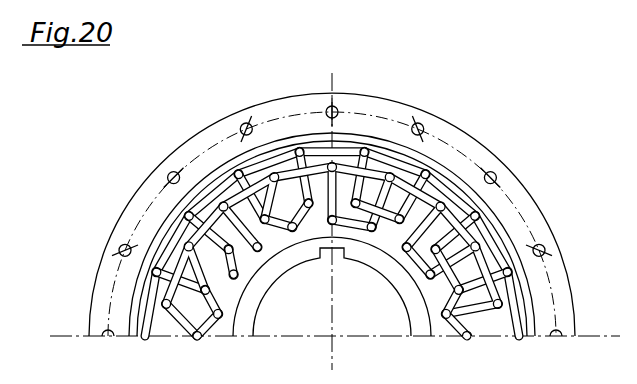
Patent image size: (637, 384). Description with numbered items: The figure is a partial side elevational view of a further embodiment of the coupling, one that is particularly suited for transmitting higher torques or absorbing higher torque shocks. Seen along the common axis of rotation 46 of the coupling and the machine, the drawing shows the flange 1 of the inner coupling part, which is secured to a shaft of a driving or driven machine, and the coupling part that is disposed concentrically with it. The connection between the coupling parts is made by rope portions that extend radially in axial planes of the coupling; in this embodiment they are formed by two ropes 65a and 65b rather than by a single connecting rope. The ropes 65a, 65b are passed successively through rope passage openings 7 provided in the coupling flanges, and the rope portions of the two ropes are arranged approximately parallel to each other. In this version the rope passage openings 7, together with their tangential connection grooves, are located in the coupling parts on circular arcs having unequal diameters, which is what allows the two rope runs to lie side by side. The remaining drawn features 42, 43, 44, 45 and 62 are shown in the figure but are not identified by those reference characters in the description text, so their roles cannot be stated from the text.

The flange 1 is at (240, 328).
The rope passage openings 7 is at (331, 162).
The stator housing ring 42 is at (417, 168).
The coil end connections 43 is at (405, 232).
The mounting flange 44 is at (500, 232).
The air gap 45 is at (433, 295).
The axis of rotation 46 is at (332, 337).
The stator core 62 is at (386, 153).
The rope 65a is at (300, 152).
The rope 65b is at (275, 178).